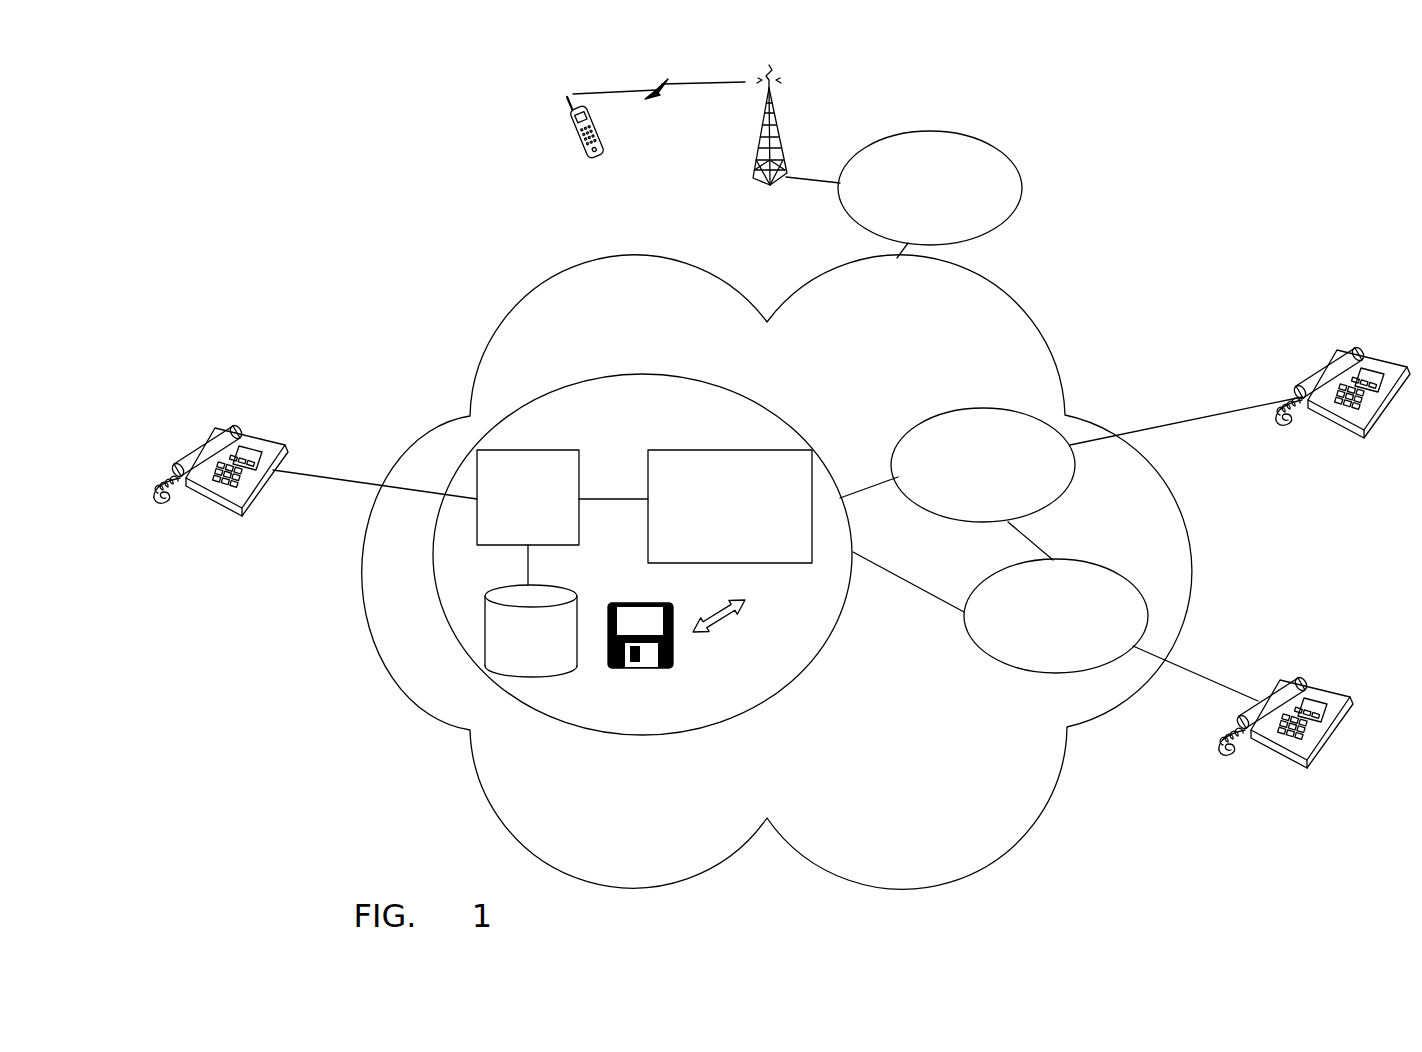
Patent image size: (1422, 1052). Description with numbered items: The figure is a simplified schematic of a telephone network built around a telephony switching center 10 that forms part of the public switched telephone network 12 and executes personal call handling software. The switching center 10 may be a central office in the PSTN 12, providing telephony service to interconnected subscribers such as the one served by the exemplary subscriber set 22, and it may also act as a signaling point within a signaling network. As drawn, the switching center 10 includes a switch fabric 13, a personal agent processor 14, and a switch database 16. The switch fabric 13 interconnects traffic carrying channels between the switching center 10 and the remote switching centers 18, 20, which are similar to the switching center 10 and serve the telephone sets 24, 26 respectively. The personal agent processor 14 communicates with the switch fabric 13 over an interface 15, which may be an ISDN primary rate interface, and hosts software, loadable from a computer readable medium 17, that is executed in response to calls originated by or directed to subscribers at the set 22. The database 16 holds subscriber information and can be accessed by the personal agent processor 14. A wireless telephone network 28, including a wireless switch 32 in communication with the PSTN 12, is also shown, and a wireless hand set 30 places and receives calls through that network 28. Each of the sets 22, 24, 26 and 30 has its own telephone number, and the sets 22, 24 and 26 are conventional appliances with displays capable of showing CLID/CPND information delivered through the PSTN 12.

The telephony switching center 10 is at (615, 737).
The public switched telephone network 12 is at (878, 771).
The switch fabric 13 is at (517, 528).
The personal agent processor 14 is at (719, 553).
The interface 15 is at (607, 499).
The switch database 16 is at (520, 644).
The computer readable medium 17 is at (635, 668).
The remote switching center 18 is at (971, 475).
The remote switching center 20 is at (1044, 626).
The subscriber set 22 is at (248, 432).
The telephone set 24 is at (1365, 353).
The telephone set 26 is at (1308, 683).
The wireless telephone network 28 is at (1000, 121).
The wireless hand set 30 is at (597, 127).
The wireless switch 32 is at (918, 219).